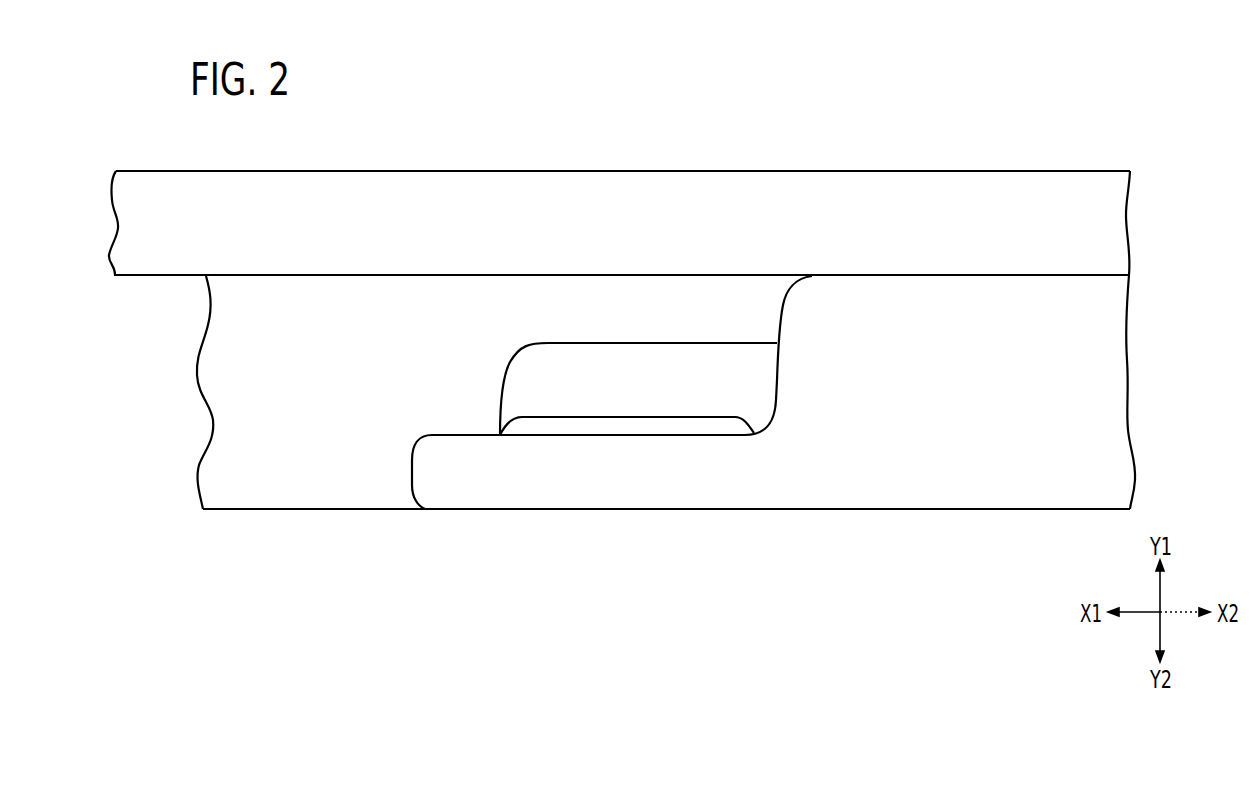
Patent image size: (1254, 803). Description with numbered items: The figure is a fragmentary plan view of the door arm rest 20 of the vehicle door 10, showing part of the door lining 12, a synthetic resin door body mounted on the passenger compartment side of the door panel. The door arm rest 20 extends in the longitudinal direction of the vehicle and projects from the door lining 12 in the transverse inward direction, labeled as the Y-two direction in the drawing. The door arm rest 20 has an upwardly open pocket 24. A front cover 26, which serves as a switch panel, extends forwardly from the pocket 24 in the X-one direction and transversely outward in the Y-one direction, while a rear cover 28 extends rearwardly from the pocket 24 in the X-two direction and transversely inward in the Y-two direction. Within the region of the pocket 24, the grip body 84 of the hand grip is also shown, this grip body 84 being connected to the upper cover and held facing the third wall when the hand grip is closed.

The vehicle door 10 is at (429, 132).
The door lining 12 is at (1050, 170).
The door arm rest 20 is at (203, 511).
The pocket 24 is at (678, 360).
The front cover 26 is at (382, 493).
The rear cover 28 is at (948, 498).
The grip body 84 is at (601, 420).